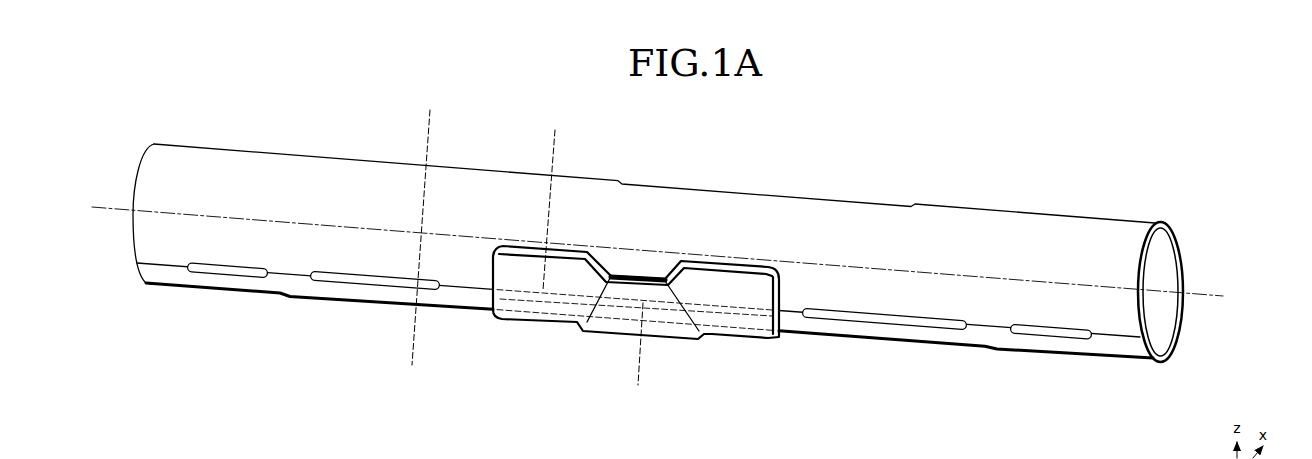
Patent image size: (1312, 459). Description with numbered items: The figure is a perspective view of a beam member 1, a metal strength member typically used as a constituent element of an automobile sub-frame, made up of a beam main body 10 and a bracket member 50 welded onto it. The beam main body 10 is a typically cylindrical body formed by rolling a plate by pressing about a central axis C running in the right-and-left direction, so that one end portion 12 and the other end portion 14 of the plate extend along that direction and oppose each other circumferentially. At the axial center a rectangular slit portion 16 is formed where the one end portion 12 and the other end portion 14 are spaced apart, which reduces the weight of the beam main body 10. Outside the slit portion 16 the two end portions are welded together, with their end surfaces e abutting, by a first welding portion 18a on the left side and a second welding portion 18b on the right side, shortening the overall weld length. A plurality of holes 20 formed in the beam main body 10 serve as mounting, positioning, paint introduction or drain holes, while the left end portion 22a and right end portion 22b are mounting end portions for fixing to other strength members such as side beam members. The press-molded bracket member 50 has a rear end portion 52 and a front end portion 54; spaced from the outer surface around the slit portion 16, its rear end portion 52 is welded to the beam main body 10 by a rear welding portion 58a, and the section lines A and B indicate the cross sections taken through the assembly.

The beam member 1 is at (980, 105).
The beam main body 10 is at (1040, 193).
The one end portion 12 is at (1118, 324).
The other end portion 14 is at (1128, 348).
The slit portion 16 is at (733, 317).
The first welding portion 18a is at (215, 276).
The second welding portion 18b is at (843, 319).
The holes 20 is at (913, 203).
The left end portion 22a is at (150, 174).
The right end portion 22b is at (1125, 257).
The bracket member 50 is at (535, 332).
The rear end portion 52 is at (777, 283).
The front end portion 54 is at (797, 338).
The rear welding portion 58a is at (577, 246).
The end surface e is at (165, 269).
The central axis C is at (1212, 296).
The section line A is at (561, 137).
The section line B is at (436, 126).